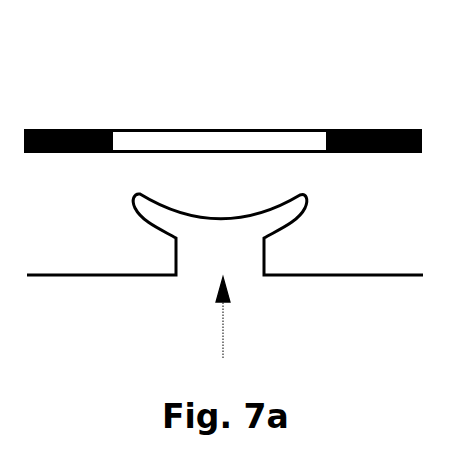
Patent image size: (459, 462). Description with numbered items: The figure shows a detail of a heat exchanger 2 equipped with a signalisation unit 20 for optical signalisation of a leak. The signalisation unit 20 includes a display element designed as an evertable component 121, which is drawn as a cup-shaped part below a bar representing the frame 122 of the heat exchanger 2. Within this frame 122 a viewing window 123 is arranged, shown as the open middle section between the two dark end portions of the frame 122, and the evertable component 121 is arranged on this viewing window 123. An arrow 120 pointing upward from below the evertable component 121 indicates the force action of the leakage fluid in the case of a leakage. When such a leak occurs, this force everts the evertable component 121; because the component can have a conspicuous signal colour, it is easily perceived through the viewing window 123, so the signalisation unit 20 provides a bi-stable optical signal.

The heat exchanger 2 is at (96, 73).
The signalisation unit 20 is at (90, 247).
The arrow 120 is at (220, 340).
The evertable component 121 is at (307, 213).
The frame 122 is at (370, 129).
The viewing window 123 is at (213, 129).